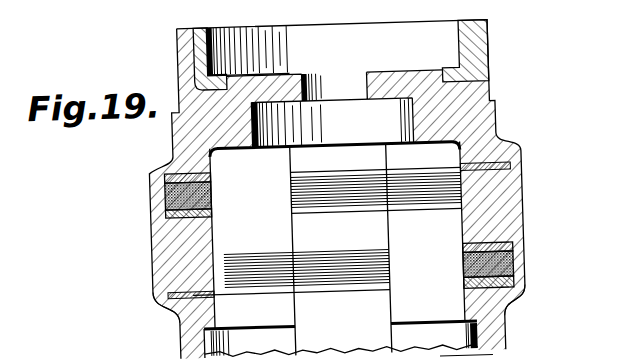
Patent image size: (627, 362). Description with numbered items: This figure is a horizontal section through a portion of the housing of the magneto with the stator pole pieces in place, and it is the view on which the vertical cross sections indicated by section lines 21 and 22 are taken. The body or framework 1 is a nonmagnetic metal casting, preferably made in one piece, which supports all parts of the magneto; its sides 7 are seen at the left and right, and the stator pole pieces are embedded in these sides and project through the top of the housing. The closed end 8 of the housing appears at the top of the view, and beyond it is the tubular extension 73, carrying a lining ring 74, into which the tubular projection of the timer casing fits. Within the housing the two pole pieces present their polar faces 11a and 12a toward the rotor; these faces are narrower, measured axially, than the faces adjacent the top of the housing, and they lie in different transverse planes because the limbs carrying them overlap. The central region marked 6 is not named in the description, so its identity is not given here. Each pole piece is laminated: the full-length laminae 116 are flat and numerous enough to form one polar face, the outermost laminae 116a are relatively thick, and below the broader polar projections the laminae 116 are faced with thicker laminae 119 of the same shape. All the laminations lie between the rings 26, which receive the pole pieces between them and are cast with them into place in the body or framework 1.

The body or framework 1 is at (500, 135).
The valve body 6 is at (338, 249).
The sides of the housing 7 is at (150, 286).
The closed end of the housing 8 is at (400, 82).
The polar face 11a is at (230, 272).
The polar face 12a is at (427, 201).
The section line 21 is at (165, 252).
The section line 22 is at (165, 176).
The rings 26 is at (330, 175).
The tubular extension 73 is at (182, 37).
The lining ring 74 is at (466, 46).
The laminae 116 is at (348, 187).
The outermost laminae 116a is at (295, 182).
The thicker laminae 119 is at (311, 211).